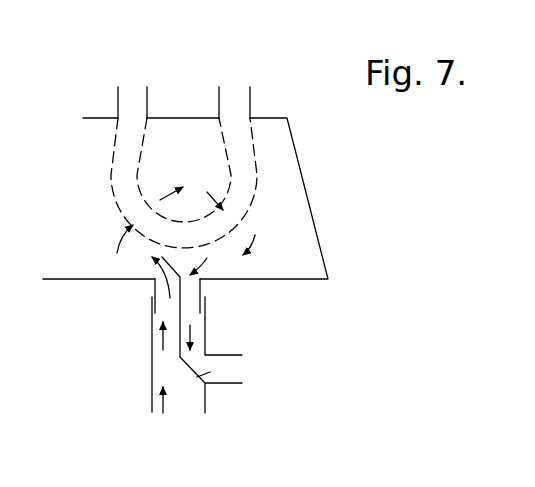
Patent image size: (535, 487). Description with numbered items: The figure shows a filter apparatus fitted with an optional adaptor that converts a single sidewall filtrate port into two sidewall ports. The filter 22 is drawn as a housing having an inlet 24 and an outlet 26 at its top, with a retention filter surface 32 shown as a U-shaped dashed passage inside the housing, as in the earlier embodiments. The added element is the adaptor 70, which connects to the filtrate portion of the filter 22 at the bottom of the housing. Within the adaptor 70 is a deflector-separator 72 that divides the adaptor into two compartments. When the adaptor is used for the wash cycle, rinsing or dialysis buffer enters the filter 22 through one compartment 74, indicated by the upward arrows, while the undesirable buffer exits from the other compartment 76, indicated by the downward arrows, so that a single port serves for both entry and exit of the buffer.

The filter 22 is at (310, 208).
The inlet 24 is at (130, 90).
The outlet 26 is at (234, 90).
The retention filter surface 32 is at (258, 162).
The adaptor 70 is at (220, 332).
The deflector-separator 72 is at (210, 372).
The compartment 74 is at (166, 351).
The compartment 76 is at (190, 358).